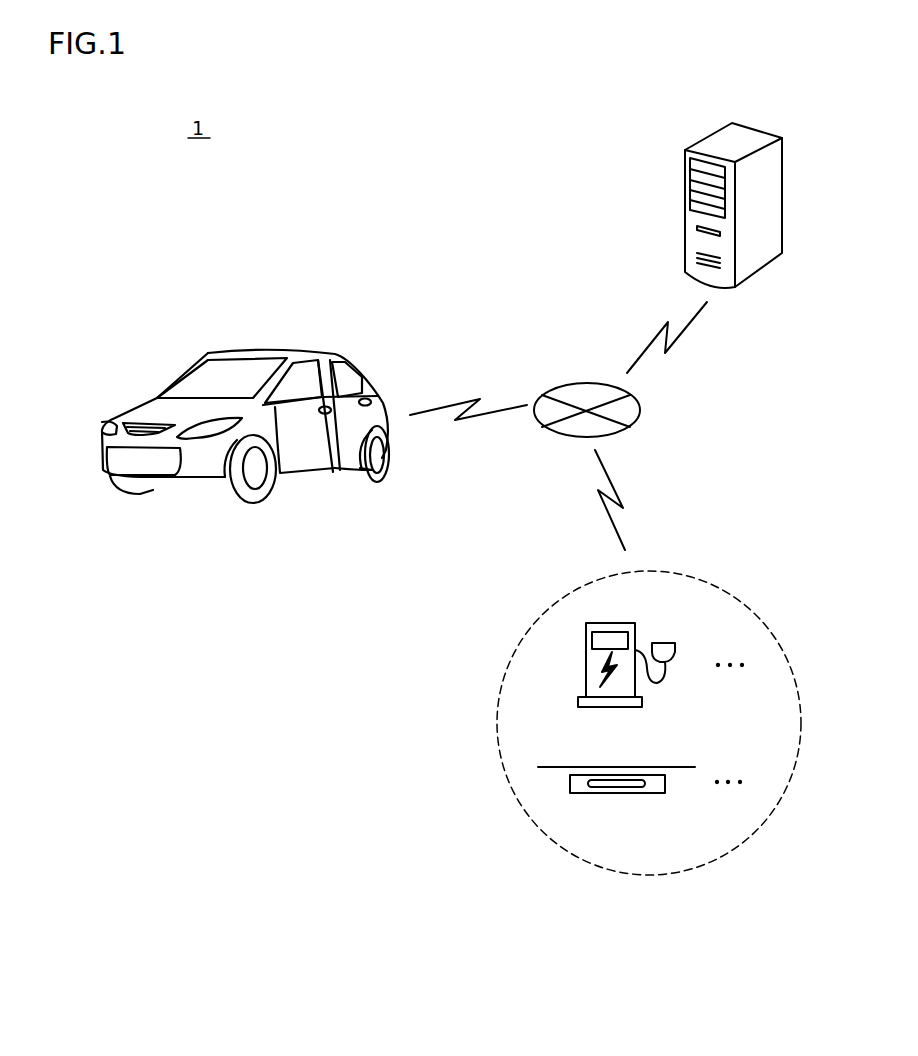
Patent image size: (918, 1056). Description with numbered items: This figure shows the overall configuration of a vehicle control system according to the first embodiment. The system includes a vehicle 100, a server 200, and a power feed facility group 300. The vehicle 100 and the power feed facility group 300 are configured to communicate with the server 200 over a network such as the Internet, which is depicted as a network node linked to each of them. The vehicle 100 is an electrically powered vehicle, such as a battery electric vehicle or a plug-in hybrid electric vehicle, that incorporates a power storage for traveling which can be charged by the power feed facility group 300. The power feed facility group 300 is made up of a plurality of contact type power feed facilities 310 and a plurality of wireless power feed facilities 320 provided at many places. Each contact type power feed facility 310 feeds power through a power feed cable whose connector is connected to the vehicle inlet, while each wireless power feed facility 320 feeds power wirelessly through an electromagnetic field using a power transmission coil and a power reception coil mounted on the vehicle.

The vehicle 100 is at (308, 350).
The server 200 is at (748, 143).
The power feed facility group 300 is at (707, 583).
The contact type power feed facility 310 is at (622, 623).
The wireless power feed facility 320 is at (636, 795).